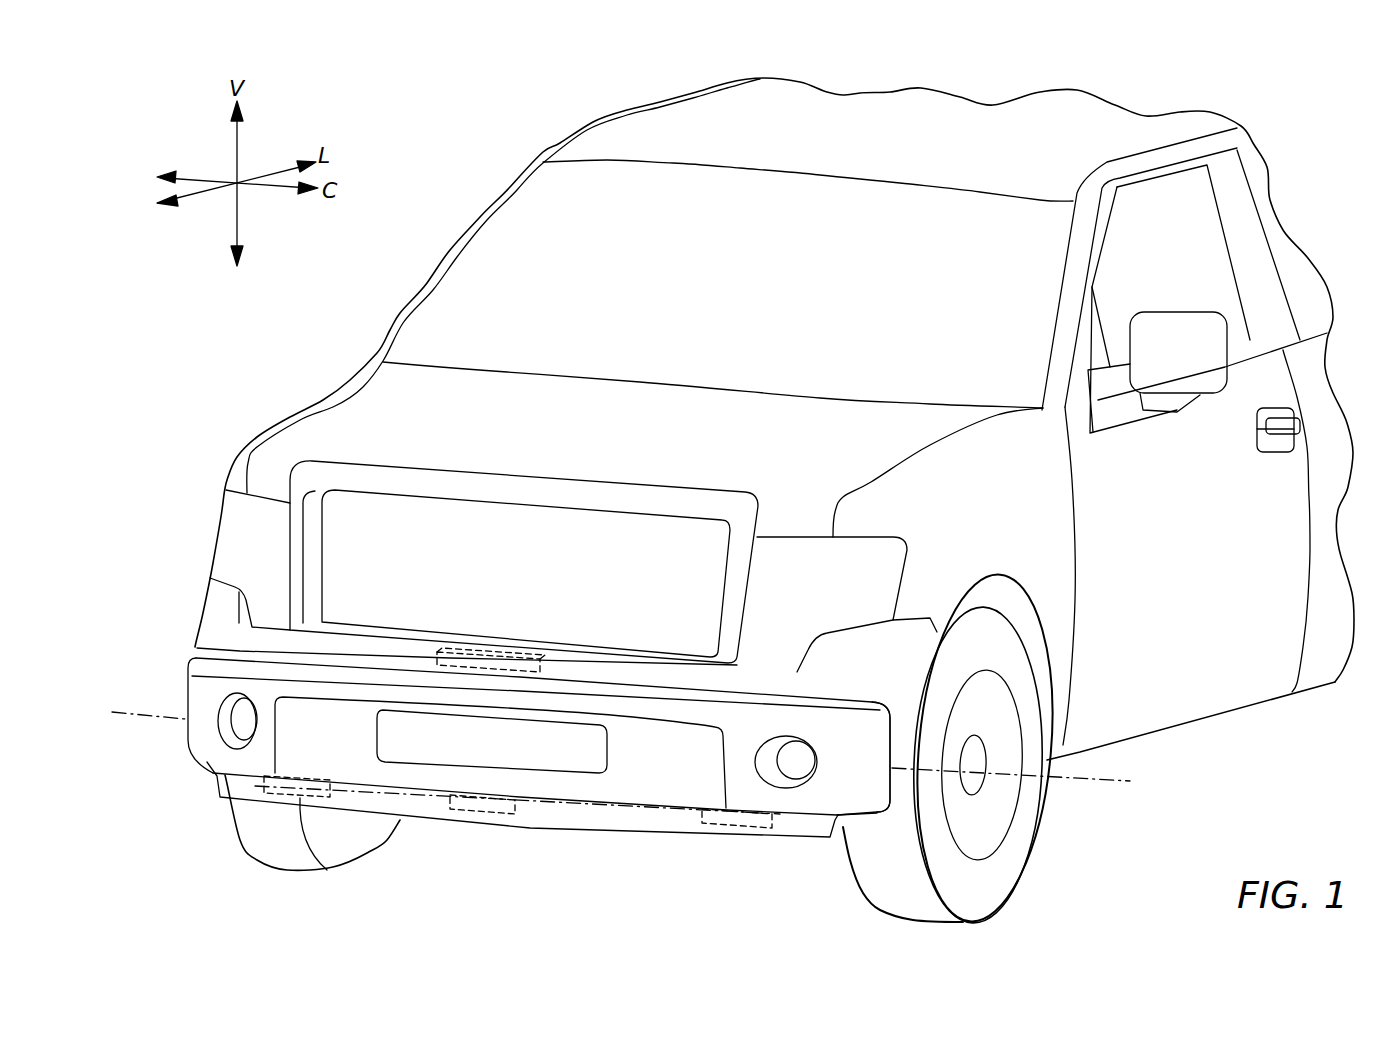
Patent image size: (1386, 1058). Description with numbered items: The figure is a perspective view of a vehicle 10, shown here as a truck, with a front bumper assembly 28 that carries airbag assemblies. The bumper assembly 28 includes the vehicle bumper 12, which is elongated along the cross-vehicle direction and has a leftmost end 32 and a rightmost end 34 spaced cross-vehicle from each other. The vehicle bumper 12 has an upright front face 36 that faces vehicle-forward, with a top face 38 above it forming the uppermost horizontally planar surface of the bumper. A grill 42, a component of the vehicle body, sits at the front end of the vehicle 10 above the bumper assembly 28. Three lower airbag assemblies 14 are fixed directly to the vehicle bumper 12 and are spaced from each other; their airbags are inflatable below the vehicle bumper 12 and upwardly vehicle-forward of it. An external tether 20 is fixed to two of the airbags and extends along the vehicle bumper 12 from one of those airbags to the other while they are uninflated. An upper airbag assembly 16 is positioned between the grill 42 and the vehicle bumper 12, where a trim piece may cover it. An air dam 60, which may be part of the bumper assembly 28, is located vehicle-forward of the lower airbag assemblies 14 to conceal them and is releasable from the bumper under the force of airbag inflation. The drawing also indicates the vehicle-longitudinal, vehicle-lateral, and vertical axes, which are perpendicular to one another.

The vehicle 10 is at (1316, 119).
The vehicle bumper 12 is at (861, 783).
The lower airbag assemblies 14 is at (280, 795).
The upper airbag assembly 16 is at (522, 645).
The external tether 20 is at (423, 798).
The bumper assembly 28 is at (683, 852).
The leftmost end 32 is at (892, 730).
The rightmost end 34 is at (186, 672).
The front face 36 is at (655, 784).
The top face 38 is at (826, 684).
The grill 42 is at (372, 553).
The air dam 60 is at (357, 800).